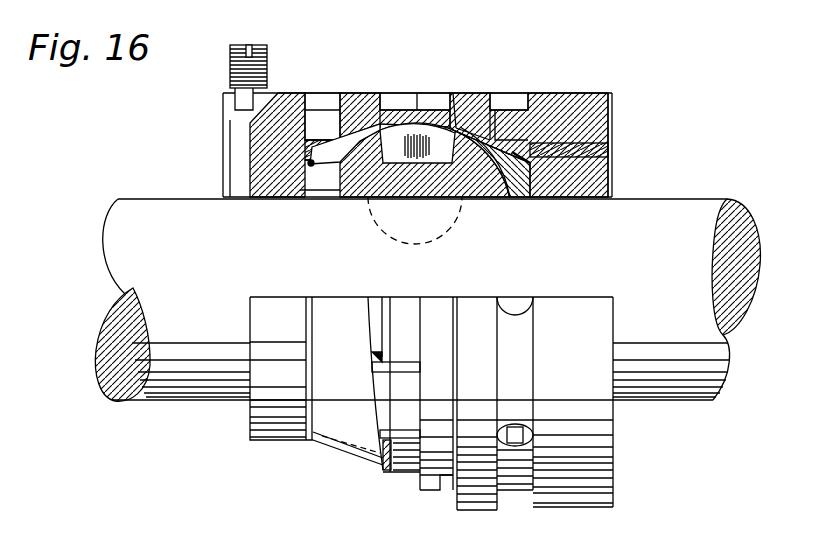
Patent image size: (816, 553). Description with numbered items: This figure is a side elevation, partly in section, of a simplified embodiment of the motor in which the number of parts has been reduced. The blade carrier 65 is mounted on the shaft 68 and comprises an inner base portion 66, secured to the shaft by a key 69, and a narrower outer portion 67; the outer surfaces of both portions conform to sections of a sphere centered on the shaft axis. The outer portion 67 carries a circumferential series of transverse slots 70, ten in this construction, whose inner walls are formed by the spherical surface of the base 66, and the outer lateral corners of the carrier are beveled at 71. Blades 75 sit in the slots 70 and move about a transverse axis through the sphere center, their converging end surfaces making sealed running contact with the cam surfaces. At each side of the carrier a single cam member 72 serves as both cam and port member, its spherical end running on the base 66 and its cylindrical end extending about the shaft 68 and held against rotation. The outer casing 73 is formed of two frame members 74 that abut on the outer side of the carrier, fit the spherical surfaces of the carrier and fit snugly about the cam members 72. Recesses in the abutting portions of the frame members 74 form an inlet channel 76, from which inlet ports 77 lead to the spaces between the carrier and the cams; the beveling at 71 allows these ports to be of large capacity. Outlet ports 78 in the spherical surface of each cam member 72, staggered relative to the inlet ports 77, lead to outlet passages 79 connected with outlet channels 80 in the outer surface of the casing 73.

The blade carrier 65 is at (370, 187).
The base portion 66 is at (477, 190).
The outer portion 67 is at (450, 120).
The shaft 68 is at (658, 202).
The key 69 is at (408, 193).
The transverse slots 70 is at (400, 364).
The beveled corners 71 is at (385, 335).
The cam member 72 is at (304, 200).
The outer casing 73 is at (589, 90).
The frame members 74 is at (287, 110).
The blades 75 is at (435, 148).
The inlet channel 76 is at (400, 100).
The inlet ports 77 is at (477, 97).
The outlet ports 78 is at (307, 163).
The outlet passages 79 is at (310, 147).
The outlet channels 80 is at (315, 100).